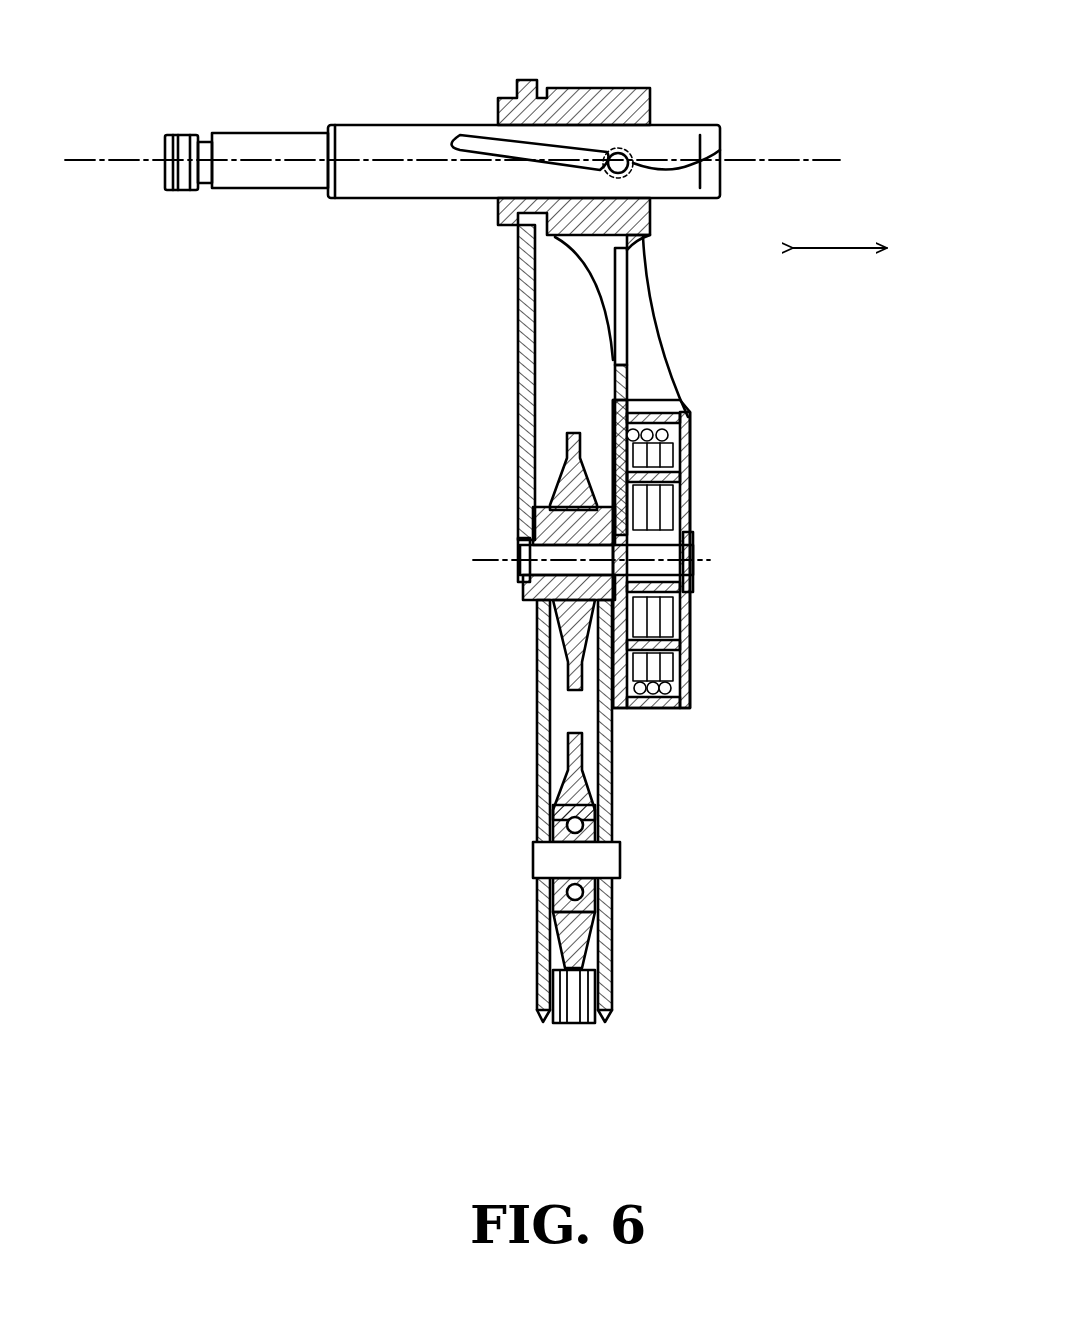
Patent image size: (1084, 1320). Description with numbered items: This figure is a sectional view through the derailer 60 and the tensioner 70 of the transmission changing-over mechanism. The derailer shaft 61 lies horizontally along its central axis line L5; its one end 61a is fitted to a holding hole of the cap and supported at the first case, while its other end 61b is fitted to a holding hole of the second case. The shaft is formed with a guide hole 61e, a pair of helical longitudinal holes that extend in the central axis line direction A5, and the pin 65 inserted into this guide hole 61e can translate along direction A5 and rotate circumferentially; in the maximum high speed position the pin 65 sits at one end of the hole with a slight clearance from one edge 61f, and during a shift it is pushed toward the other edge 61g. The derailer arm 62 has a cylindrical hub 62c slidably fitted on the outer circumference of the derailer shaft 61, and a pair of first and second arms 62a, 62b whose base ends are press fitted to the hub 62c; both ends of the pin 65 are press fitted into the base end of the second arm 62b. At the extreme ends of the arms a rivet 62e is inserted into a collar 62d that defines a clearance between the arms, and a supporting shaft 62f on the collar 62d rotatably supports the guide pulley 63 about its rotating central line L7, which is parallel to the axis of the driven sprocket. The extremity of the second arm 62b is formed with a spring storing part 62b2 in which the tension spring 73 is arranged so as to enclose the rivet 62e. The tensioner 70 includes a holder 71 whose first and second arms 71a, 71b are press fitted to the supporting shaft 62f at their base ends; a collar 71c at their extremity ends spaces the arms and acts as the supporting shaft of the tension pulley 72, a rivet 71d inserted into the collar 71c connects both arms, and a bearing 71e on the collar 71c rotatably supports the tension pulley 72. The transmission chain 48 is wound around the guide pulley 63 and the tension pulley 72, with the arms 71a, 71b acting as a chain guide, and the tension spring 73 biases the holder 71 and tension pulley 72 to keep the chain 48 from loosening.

The derailer 60 is at (800, 58).
The derailer shaft 61 is at (357, 133).
The one end of the derailer shaft 61a is at (255, 147).
The other end of the derailer shaft 61b is at (700, 190).
The guide hole 61e is at (520, 150).
The one edge of the guide hole 61f is at (723, 143).
The other edge of the guide hole 61g is at (440, 136).
The derailer arm 62 is at (594, 498).
The first arm 62a is at (523, 327).
The second arm 62b is at (627, 373).
The spring storing part 62b2 is at (665, 712).
The cylindrical hub 62c is at (647, 90).
The collar 62d is at (520, 592).
The rivet 62e is at (700, 557).
The supporting shaft 62f is at (520, 555).
The guide pulley 63 is at (560, 490).
The pin 65 is at (627, 152).
The tensioner 70 is at (556, 839).
The holder 71 is at (586, 811).
The first arm of the holder 71a is at (535, 762).
The second arm of the holder 71b is at (613, 768).
The collar 71c is at (617, 857).
The rivet 71d is at (535, 862).
The bearing 71e is at (617, 920).
The tension pulley 72 is at (560, 932).
The tension spring 73 is at (690, 662).
The transmission chain 48 is at (593, 1020).
The central axis line L5 is at (823, 160).
The rotating central line L7 is at (490, 560).
The central axis line direction A5 is at (837, 248).